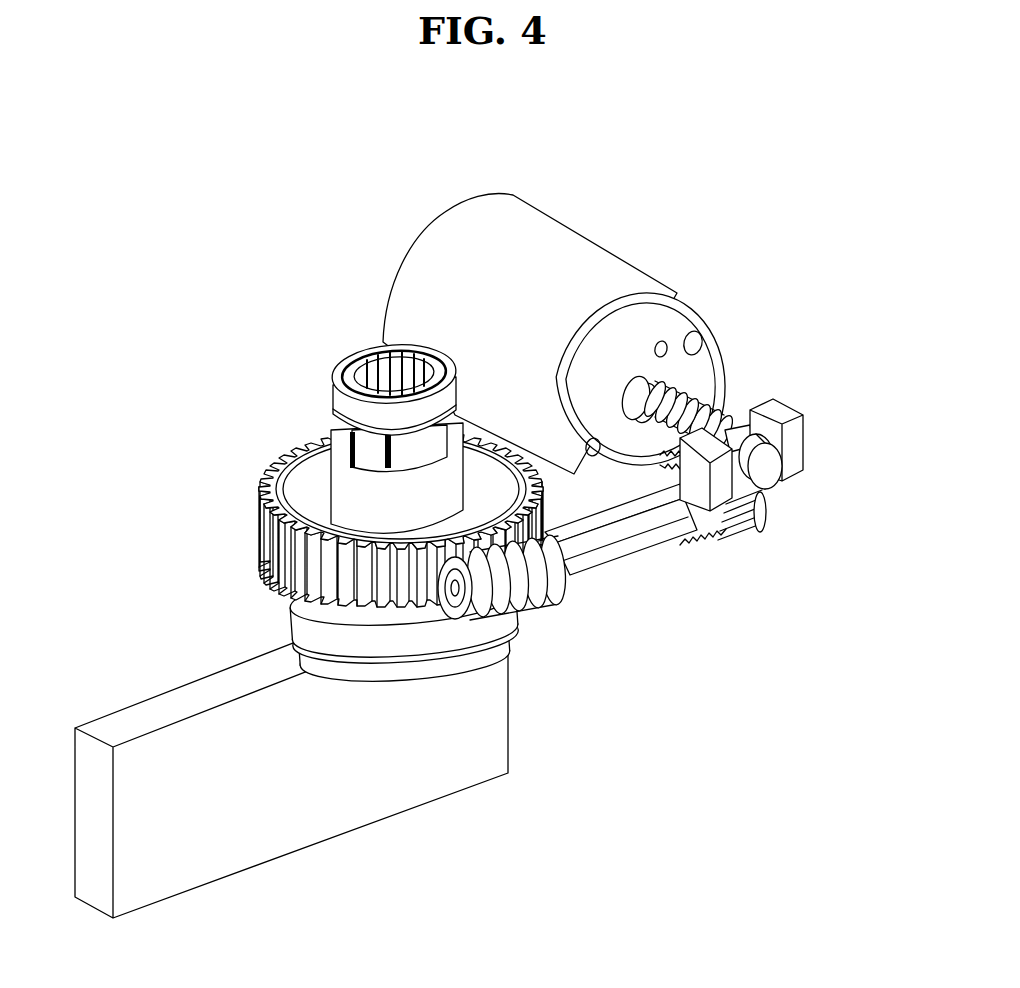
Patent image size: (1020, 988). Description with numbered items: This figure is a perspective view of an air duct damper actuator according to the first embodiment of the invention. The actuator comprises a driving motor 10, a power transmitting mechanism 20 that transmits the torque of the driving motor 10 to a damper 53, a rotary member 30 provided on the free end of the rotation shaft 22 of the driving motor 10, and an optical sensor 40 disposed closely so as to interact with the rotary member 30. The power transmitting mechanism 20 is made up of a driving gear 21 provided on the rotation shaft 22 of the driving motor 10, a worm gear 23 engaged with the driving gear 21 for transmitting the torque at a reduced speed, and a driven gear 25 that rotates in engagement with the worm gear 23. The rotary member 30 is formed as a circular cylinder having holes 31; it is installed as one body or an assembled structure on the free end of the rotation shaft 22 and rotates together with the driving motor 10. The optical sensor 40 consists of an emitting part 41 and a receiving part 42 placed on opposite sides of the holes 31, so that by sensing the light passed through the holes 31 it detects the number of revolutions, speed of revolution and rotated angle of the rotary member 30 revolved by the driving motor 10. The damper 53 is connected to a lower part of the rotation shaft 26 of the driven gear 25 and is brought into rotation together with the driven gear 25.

The driving motor 10 is at (520, 222).
The power transmitting mechanism 20 is at (659, 578).
The driving gear 21 is at (700, 417).
The rotation shaft 22 is at (648, 384).
The worm gear 23 is at (545, 575).
The driven gear 25 is at (261, 500).
The rotation shaft 26 is at (350, 370).
The rotary member 30 is at (763, 472).
The holes 31 is at (780, 441).
The optical sensor 40 is at (776, 557).
The emitting part 41 is at (720, 500).
The receiving part 42 is at (807, 460).
The damper 53 is at (253, 838).